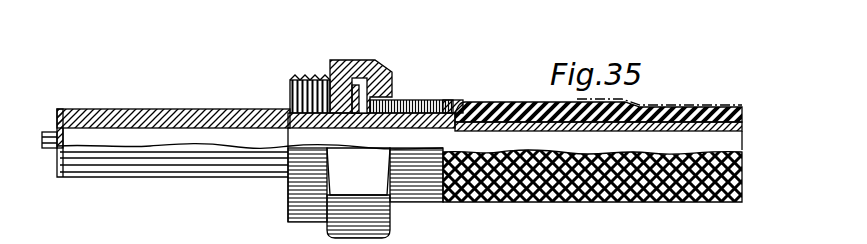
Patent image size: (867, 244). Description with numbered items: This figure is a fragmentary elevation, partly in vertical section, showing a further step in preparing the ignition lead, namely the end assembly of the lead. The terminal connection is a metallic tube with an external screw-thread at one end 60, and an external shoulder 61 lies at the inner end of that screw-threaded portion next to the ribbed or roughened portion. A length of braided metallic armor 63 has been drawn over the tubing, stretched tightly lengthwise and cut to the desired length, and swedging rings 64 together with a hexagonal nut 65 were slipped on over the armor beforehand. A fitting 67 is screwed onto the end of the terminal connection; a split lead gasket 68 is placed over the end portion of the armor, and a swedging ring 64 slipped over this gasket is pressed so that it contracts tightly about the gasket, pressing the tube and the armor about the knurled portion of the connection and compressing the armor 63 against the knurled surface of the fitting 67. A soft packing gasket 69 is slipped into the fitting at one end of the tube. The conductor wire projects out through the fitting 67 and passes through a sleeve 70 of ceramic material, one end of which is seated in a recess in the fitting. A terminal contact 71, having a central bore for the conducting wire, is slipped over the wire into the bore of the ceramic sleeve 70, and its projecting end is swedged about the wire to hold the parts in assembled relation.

The external screw-thread end 60 is at (427, 130).
The external shoulder 61 is at (462, 103).
The braided metallic armor 63 is at (590, 202).
The swedging ring 64 is at (408, 100).
The hexagonal nut 65 is at (378, 80).
The fitting 67 is at (358, 85).
The split lead gasket 68 is at (447, 108).
The soft packing gasket 69 is at (330, 93).
The ceramic sleeve 70 is at (220, 117).
The terminal contact 71 is at (52, 128).